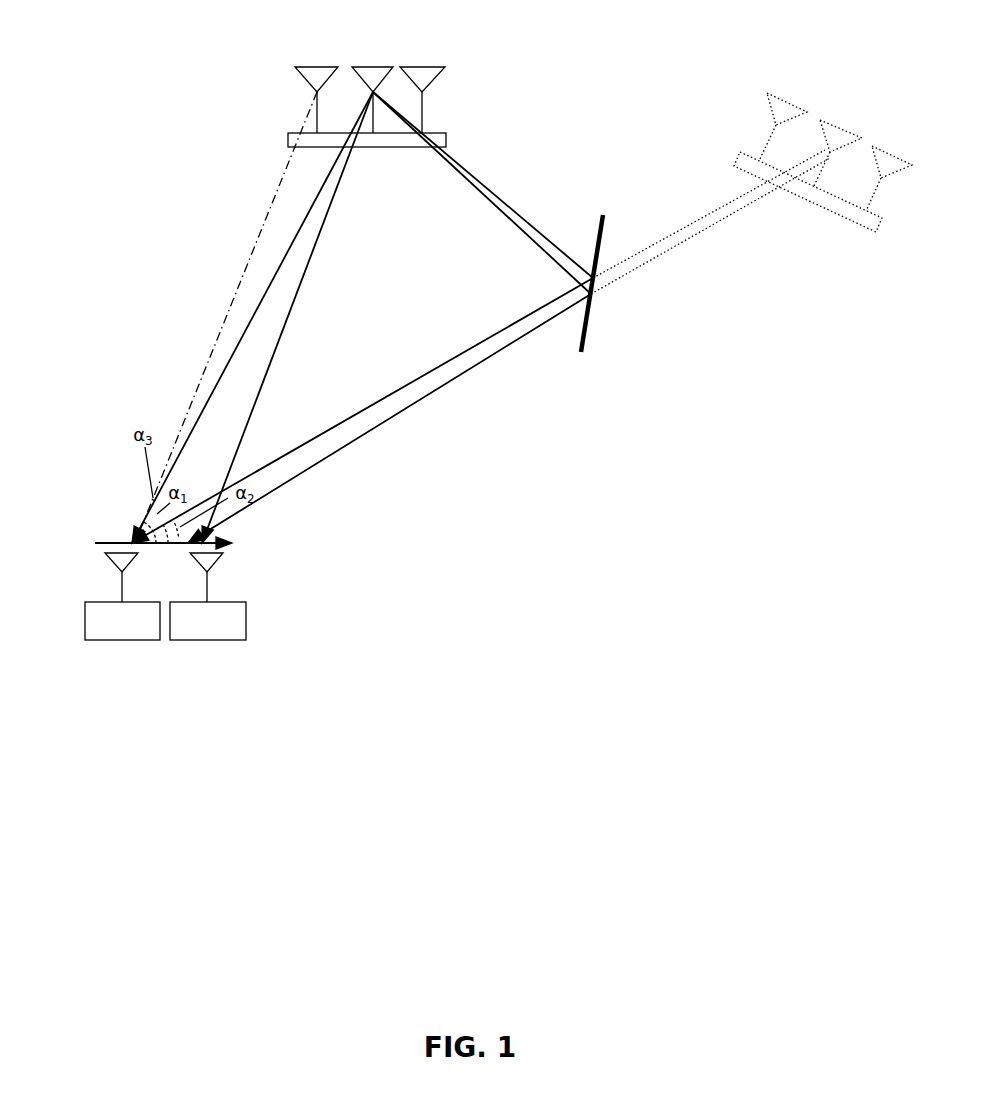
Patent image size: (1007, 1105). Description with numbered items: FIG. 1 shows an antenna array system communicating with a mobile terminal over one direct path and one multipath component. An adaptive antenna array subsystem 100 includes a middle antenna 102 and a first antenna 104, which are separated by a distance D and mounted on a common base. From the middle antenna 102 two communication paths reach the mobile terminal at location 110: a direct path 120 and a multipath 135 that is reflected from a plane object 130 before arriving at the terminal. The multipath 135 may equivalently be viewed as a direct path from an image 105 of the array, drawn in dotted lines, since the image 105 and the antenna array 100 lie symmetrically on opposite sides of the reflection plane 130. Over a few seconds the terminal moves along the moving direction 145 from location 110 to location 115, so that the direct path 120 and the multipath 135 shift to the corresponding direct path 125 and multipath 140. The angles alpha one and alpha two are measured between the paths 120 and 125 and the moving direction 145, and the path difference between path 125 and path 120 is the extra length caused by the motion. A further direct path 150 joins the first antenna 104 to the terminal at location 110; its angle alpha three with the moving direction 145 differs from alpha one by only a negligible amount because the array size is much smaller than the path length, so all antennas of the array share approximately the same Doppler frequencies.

The adaptive antenna array subsystem 100 is at (435, 100).
The middle antenna 102 is at (363, 58).
The first antenna 104 is at (293, 75).
The image of the AAS 105 is at (738, 143).
The mobile terminal location 110 is at (100, 597).
The mobile terminal location 115 is at (218, 582).
The direct path 120 is at (212, 392).
The direct path 125 is at (252, 408).
The plane object 130 is at (612, 223).
The multipath 135 is at (407, 383).
The multipath 140 is at (458, 380).
The moving direction 145 is at (113, 543).
The direct path 150 is at (230, 298).